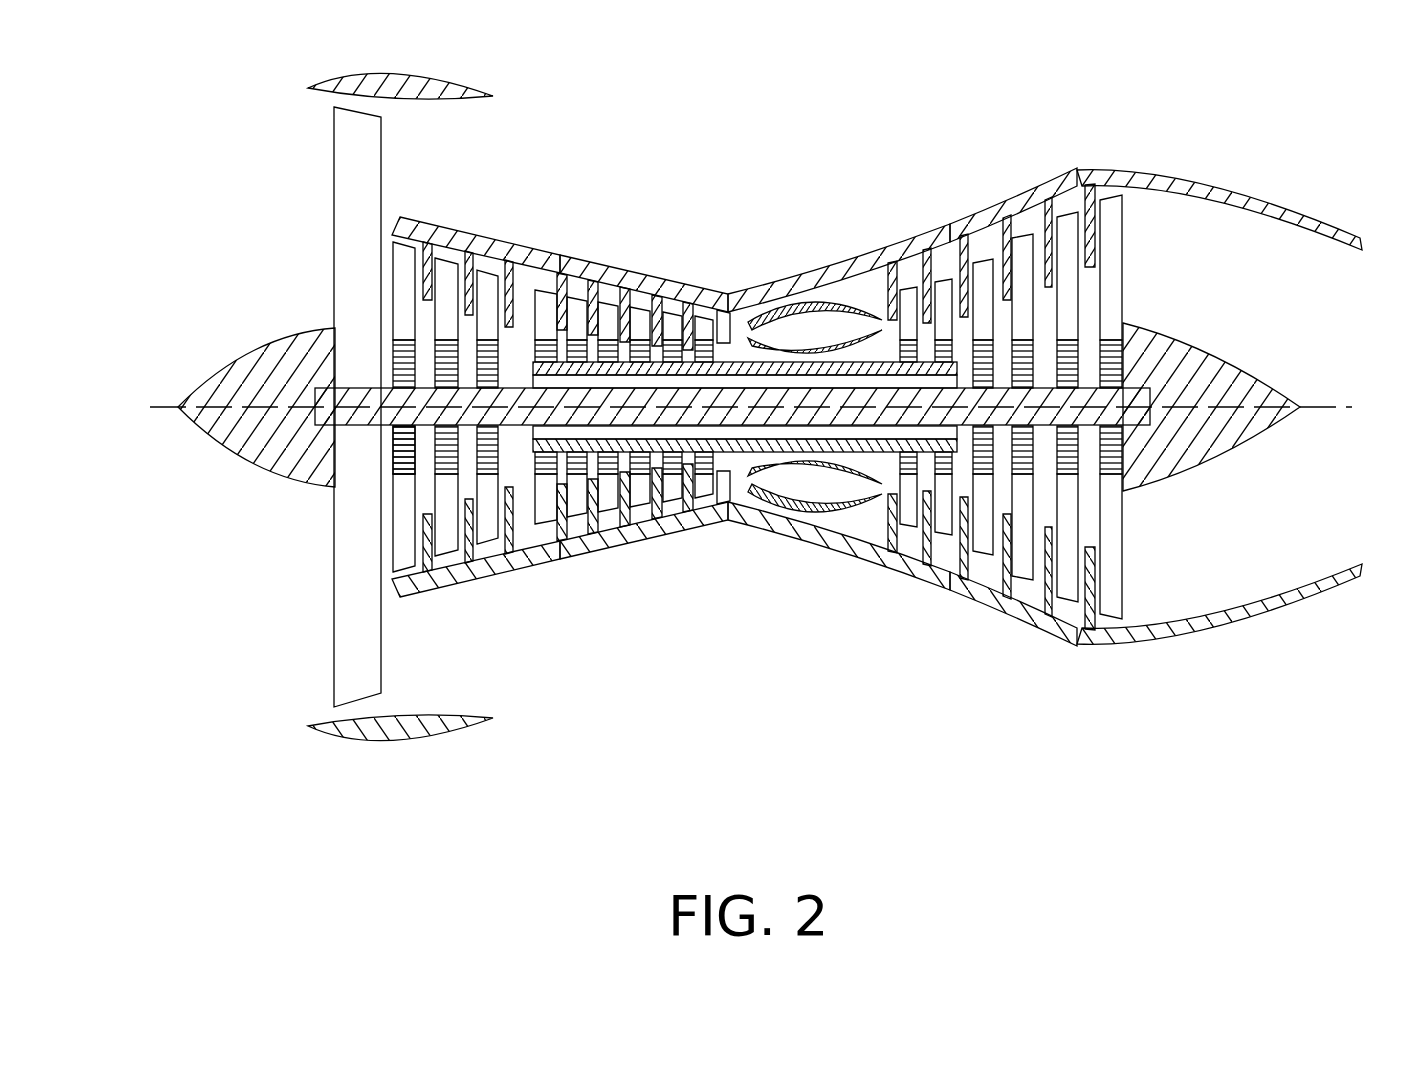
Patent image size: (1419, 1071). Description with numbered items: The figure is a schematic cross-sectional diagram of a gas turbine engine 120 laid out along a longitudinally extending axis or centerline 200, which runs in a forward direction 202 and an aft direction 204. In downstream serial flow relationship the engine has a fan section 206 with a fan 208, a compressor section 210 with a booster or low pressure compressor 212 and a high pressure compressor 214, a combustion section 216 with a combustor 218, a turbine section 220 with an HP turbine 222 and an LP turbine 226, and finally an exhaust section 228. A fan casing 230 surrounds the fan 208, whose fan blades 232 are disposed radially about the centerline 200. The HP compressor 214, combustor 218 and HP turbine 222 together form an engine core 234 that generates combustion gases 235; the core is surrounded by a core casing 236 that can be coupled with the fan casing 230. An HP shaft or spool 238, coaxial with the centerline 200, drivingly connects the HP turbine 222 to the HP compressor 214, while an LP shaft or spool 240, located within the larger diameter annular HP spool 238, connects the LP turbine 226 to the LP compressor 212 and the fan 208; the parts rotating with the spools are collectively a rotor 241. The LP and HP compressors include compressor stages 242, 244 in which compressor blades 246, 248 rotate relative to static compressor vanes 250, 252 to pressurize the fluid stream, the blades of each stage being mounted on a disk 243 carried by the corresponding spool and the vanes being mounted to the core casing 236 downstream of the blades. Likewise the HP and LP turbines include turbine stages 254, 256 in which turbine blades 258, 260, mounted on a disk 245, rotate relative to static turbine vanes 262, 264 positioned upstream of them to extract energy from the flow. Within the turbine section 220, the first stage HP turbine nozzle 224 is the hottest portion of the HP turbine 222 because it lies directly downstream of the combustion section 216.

The gas turbine engine 120 is at (228, 66).
The centerline 200 is at (222, 378).
The forward direction 202 is at (150, 407).
The aft direction 204 is at (1300, 407).
The fan section 206 is at (387, 777).
The fan 208 is at (298, 407).
The compressor section 210 is at (747, 777).
The low pressure compressor 212 is at (541, 572).
The high pressure compressor 214 is at (678, 558).
The combustion section 216 is at (898, 777).
The combustor 218 is at (803, 274).
The turbine section 220 is at (1118, 777).
The HP turbine 222 is at (882, 582).
The first stage HP turbine nozzle 224 is at (873, 498).
The LP turbine 226 is at (1010, 624).
The exhaust section 228 is at (1348, 777).
The fan casing 230 is at (402, 70).
The fan blades 232 is at (353, 635).
The engine core 234 is at (945, 622).
The combustion gases 235 is at (870, 325).
The core casing 236 is at (757, 320).
The HP shaft or spool 238 is at (737, 348).
The LP shaft or spool 240 is at (463, 263).
The rotor 241 is at (655, 360).
The compressor stages 242 is at (390, 183).
The disk 243 is at (407, 460).
The compressor stages 244 is at (745, 252).
The disk 245 is at (1022, 360).
The compressor blades 246 is at (408, 248).
The compressor blades 248 is at (548, 303).
The static compressor vanes 250 is at (427, 262).
The static compressor vanes 252 is at (560, 325).
The turbine stages 254 is at (1011, 250).
The turbine stages 256 is at (962, 265).
The turbine blades 258 is at (890, 280).
The turbine blades 260 is at (1067, 240).
The static turbine vanes 262 is at (905, 295).
The static turbine vanes 264 is at (1030, 170).